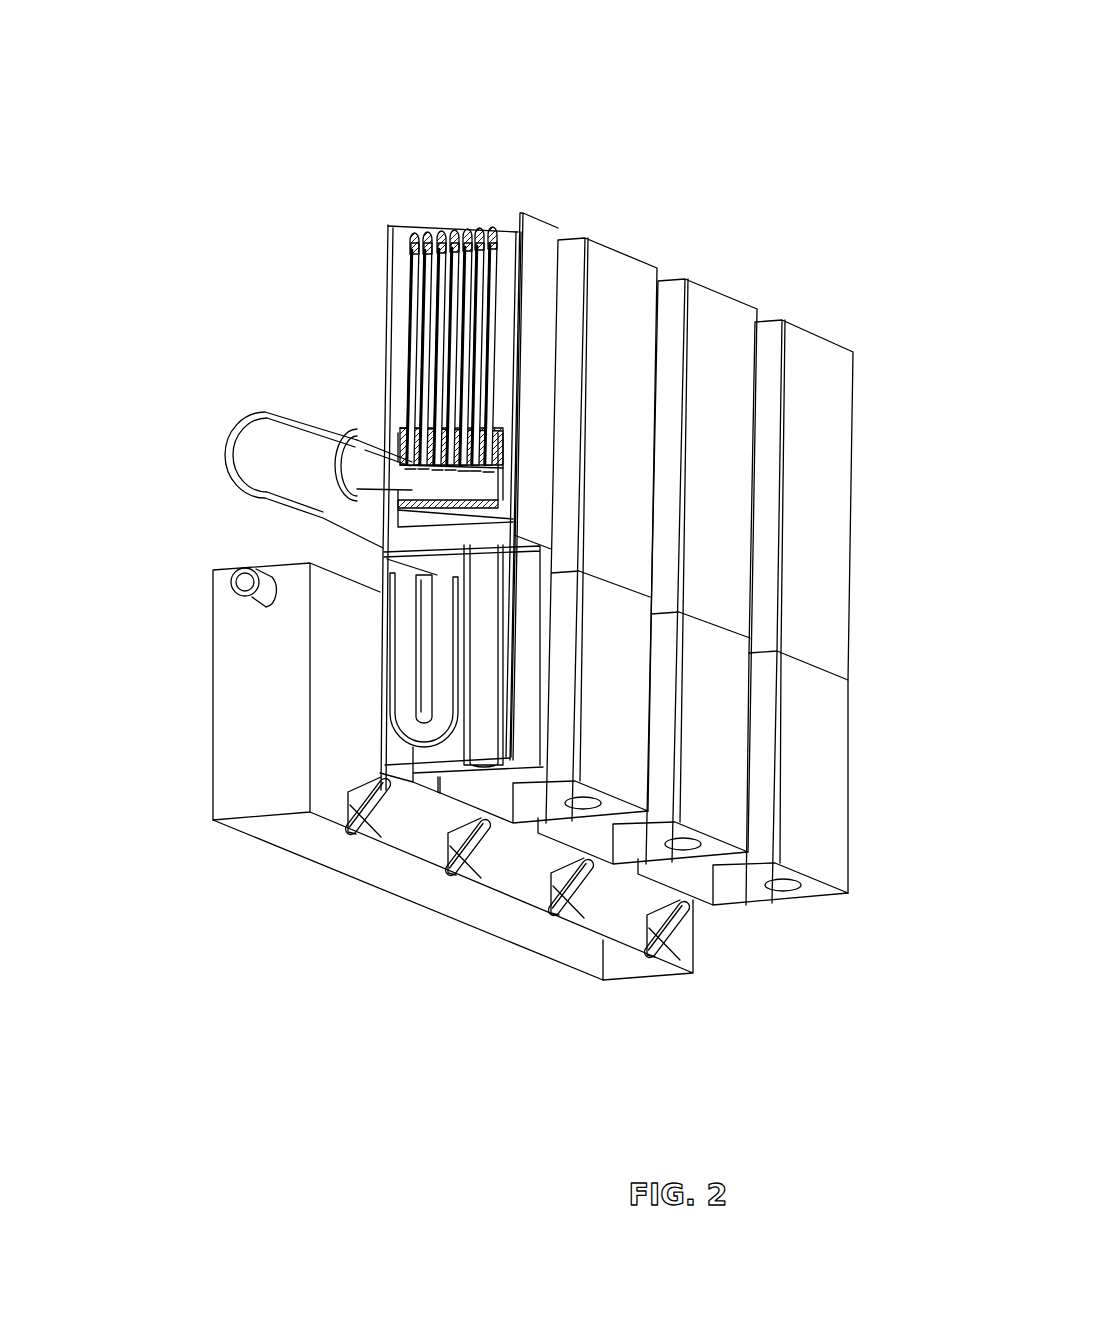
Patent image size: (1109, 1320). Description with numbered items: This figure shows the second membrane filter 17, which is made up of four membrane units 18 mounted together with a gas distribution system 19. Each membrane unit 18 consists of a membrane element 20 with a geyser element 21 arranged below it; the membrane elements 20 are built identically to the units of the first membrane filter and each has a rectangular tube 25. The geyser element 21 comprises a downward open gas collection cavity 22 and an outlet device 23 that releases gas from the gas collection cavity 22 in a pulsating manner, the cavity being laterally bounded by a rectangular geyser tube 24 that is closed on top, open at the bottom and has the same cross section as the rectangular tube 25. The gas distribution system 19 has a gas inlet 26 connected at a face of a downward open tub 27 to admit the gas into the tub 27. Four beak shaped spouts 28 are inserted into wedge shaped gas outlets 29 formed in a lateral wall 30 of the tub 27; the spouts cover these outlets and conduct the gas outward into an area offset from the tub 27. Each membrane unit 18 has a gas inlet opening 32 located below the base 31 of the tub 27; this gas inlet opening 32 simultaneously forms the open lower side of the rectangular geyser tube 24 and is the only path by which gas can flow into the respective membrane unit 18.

The second membrane filter 17 is at (858, 119).
The membrane unit 18 is at (493, 200).
The gas distribution system 19 is at (352, 963).
The membrane element 20 is at (832, 523).
The geyser element 21 is at (832, 755).
The gas collection cavity 22 is at (388, 746).
The outlet device 23 is at (437, 658).
The rectangular geyser tube 24 is at (380, 632).
The rectangular tube 25 is at (385, 345).
The gas inlet 26 is at (243, 583).
The tub 27 is at (278, 830).
The beak shaped spout 28 is at (352, 832).
The wedge shaped gas outlet 29 is at (677, 938).
The lateral wall 30 is at (658, 945).
The base 31 is at (285, 560).
The gas inlet opening 32 is at (397, 760).